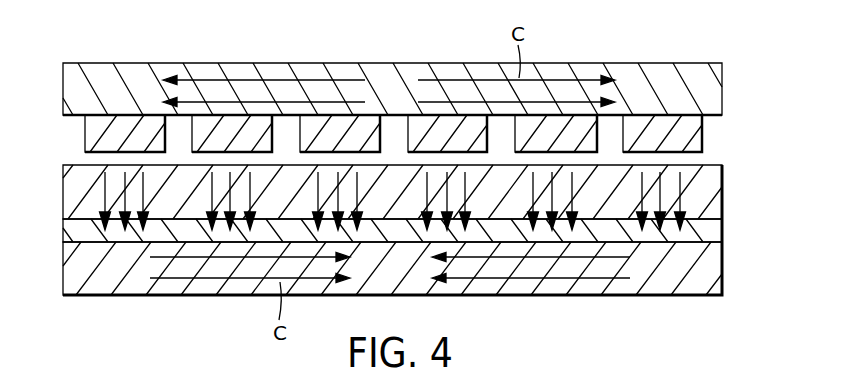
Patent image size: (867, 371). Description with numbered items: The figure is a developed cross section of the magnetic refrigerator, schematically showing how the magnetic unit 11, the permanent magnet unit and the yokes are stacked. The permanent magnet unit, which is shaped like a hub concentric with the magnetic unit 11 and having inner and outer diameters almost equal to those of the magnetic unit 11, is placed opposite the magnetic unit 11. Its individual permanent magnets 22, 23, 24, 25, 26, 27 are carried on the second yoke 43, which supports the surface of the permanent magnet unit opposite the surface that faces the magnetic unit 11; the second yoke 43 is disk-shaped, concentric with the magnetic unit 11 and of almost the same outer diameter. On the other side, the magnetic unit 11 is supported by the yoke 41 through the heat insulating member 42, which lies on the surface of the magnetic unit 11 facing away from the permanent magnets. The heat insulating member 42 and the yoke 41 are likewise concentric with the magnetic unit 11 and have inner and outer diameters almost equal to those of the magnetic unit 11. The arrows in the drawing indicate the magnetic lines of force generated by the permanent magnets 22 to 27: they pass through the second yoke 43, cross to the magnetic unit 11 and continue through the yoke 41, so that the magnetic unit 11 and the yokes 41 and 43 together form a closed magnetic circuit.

The magnetic unit 11 is at (713, 185).
The permanent magnet 22 is at (123, 128).
The permanent magnet 23 is at (237, 128).
The permanent magnet 24 is at (345, 128).
The permanent magnet 25 is at (452, 128).
The permanent magnet 26 is at (567, 128).
The permanent magnet 27 is at (660, 128).
The yoke 41 is at (713, 272).
The heat insulating member 42 is at (713, 226).
The second yoke 43 is at (718, 88).